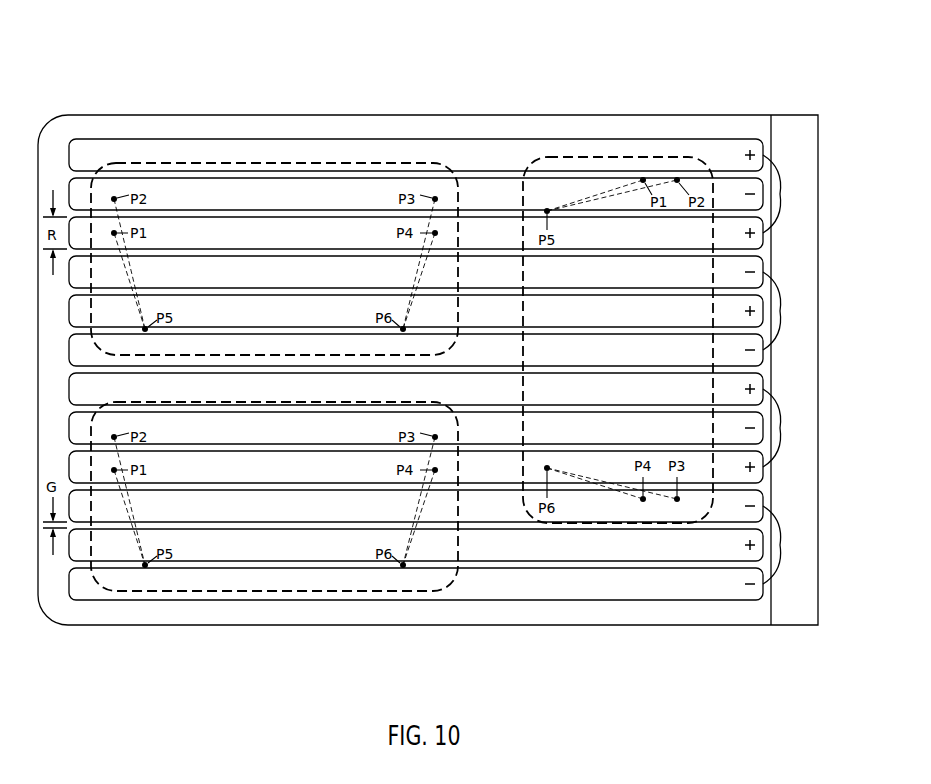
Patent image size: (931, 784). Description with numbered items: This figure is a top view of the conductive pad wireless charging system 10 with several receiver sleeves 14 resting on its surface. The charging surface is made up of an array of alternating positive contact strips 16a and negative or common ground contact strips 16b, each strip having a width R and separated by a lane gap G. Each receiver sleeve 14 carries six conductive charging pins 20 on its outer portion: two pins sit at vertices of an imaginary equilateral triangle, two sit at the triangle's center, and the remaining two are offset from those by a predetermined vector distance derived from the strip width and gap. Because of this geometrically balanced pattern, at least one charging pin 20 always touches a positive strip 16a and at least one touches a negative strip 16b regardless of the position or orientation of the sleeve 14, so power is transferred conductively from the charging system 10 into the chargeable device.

The charging system 10 is at (132, 56).
The receiver sleeve 14 is at (168, 162).
The positive contact strip 16a is at (785, 311).
The negative contact strip 16b is at (785, 428).
The charging pin 20 is at (132, 272).